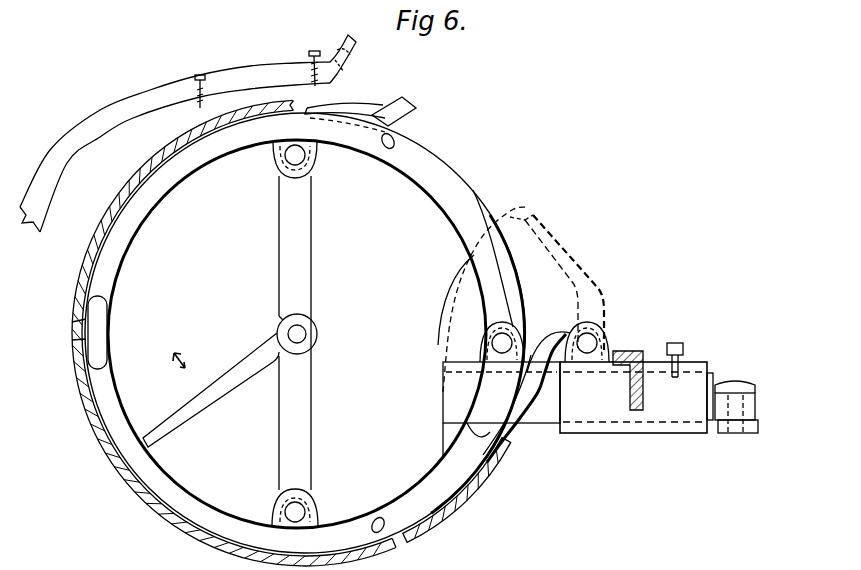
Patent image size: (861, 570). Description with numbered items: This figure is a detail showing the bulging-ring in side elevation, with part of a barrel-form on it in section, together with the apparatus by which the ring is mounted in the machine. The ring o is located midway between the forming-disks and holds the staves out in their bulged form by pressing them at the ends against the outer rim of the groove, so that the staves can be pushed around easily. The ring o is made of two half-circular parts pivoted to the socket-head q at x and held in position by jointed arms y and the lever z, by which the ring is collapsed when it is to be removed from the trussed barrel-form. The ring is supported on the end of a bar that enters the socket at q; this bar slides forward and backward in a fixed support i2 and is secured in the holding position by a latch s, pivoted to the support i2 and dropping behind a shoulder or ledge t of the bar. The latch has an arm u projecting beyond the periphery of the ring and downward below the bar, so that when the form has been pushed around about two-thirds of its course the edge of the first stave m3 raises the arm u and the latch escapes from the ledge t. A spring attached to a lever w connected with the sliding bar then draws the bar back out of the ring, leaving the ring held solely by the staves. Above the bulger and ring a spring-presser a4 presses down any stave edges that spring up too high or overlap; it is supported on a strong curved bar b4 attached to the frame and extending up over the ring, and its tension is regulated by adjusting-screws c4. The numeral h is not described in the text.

The curved bar b4 is at (188, 133).
The adjusting-screws c4 is at (193, 78).
The spring-presser a4 is at (300, 108).
The jointed arms y is at (295, 333).
The lever z is at (211, 390).
The ring o is at (383, 332).
The socket-head q is at (499, 306).
The arm h is at (515, 420).
The pivot x is at (502, 333).
The latch s is at (573, 293).
The shoulder or ledge t is at (531, 355).
The arm u is at (553, 240).
The support i2 is at (633, 388).
The lever w is at (757, 381).
The first stave m3 is at (473, 494).